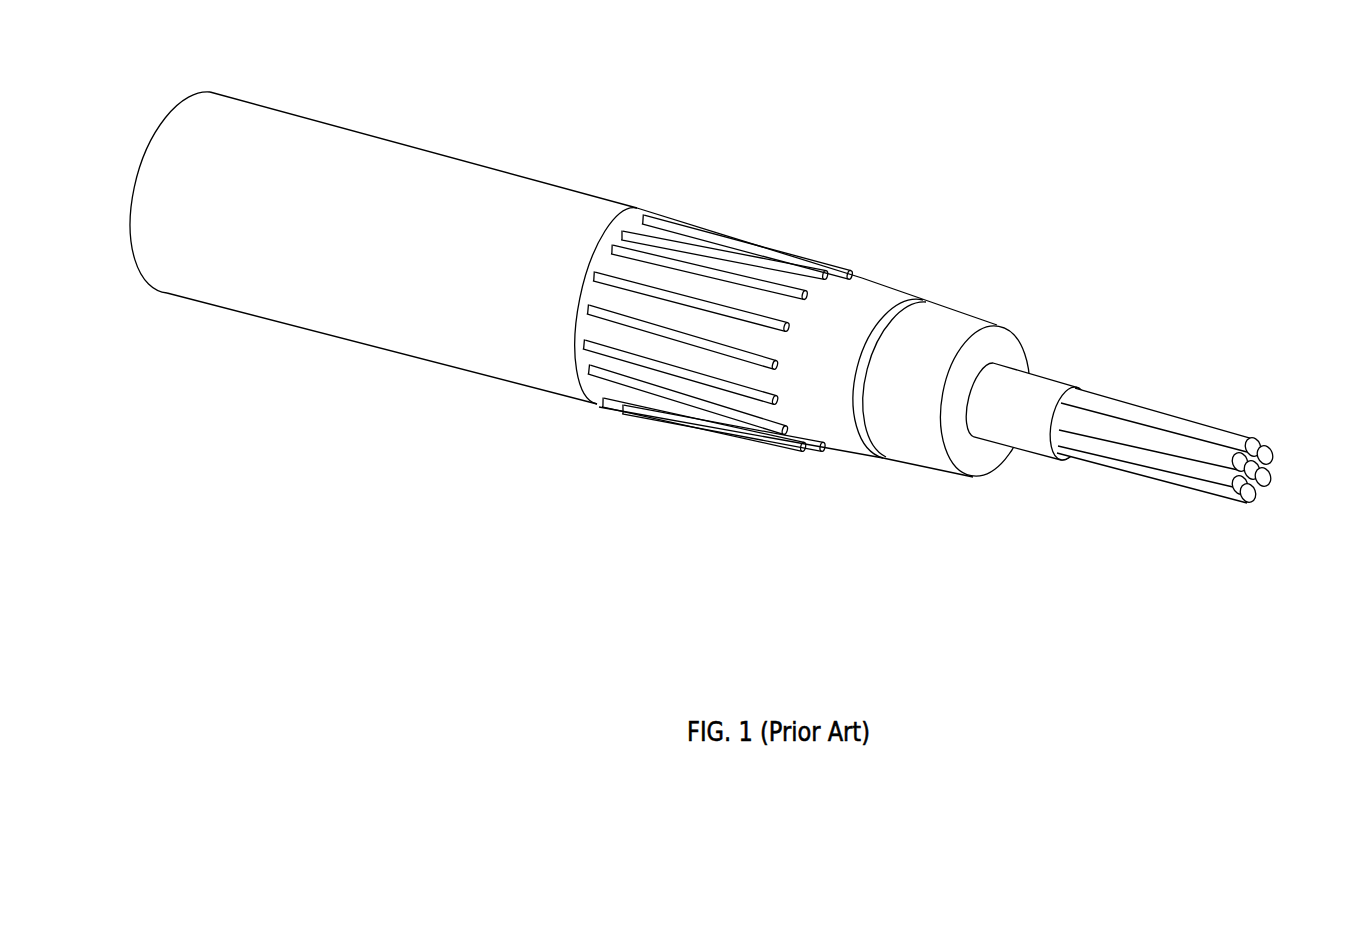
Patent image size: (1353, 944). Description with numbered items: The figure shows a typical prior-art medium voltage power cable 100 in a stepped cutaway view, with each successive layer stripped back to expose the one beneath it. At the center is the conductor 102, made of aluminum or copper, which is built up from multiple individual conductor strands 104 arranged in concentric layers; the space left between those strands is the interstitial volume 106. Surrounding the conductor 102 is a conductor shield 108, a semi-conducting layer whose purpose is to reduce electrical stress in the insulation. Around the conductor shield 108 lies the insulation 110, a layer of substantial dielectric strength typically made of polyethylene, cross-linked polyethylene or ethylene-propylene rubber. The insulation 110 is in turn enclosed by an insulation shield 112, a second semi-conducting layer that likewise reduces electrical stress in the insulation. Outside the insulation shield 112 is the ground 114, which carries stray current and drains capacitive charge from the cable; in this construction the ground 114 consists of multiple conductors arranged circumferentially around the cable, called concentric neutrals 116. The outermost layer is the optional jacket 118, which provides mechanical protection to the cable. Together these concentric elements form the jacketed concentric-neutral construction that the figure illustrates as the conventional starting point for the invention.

The medium voltage power cable 100 is at (984, 182).
The conductor 102 is at (1196, 442).
The conductor strands 104 is at (1192, 432).
The interstitial volume 106 is at (1259, 479).
The conductor shield 108 is at (1015, 430).
The insulation 110 is at (902, 443).
The insulation shield 112 is at (813, 422).
The ground 114 is at (719, 220).
The concentric neutrals 116 is at (838, 268).
The jacket 118 is at (515, 193).